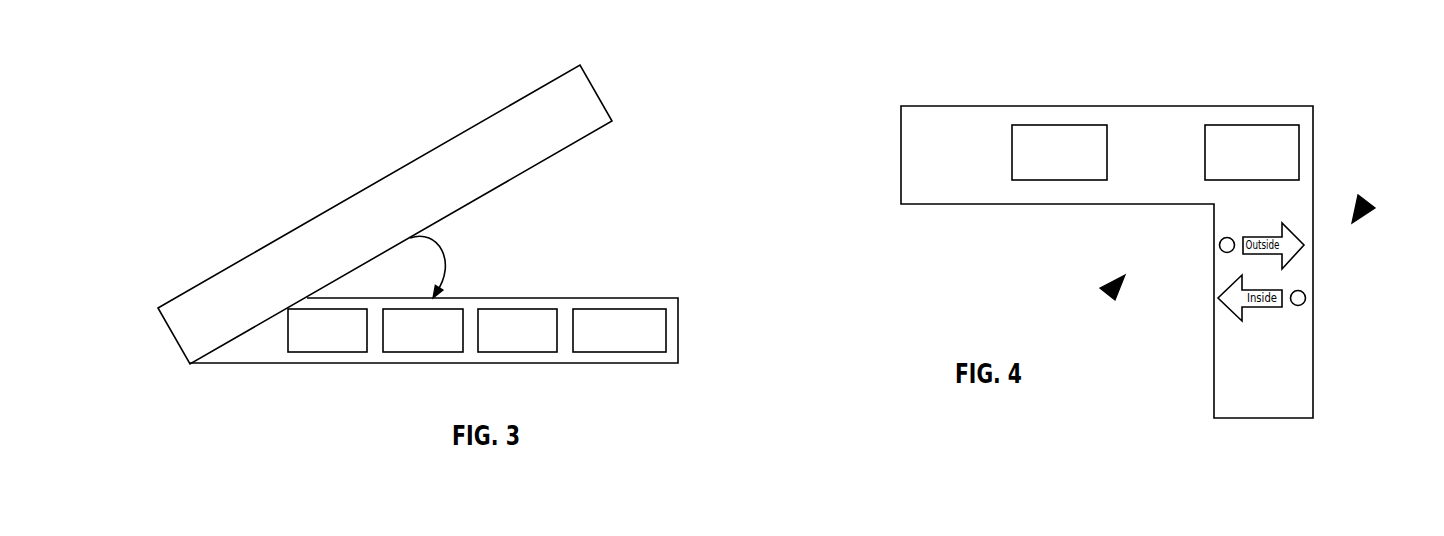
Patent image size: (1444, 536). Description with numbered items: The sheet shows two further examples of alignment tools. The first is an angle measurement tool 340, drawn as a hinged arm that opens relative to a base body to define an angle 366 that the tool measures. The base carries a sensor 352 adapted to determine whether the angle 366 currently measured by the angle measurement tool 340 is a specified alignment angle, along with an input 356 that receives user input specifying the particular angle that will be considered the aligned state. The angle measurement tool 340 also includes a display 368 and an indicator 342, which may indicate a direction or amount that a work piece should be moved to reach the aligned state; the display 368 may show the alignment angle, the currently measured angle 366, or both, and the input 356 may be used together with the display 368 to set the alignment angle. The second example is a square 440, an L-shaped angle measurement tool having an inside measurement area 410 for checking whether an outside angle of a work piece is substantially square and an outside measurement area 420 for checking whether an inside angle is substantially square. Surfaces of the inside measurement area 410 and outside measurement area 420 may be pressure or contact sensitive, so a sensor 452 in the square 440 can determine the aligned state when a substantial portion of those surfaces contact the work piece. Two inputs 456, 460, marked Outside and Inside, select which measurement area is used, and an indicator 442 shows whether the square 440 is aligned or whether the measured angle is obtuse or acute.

In FIG. 3, the angle measurement tool 340 is at (595, 90).
In FIG. 3, the angle 366 is at (443, 263).
In FIG. 3, the sensor 352 is at (328, 352).
In FIG. 3, the display 368 is at (420, 352).
In FIG. 3, the input 356 is at (517, 352).
In FIG. 3, the indicator 342 is at (620, 352).
In FIG. 4, the square 440 is at (910, 106).
In FIG. 4, the indicator 442 is at (1060, 125).
In FIG. 4, the sensor 452 is at (1252, 125).
In FIG. 4, the input 456 is at (1220, 240).
In FIG. 4, the input 460 is at (1306, 290).
In FIG. 4, the outside measurement area 420 is at (1375, 202).
In FIG. 4, the inside measurement area 410 is at (1100, 291).